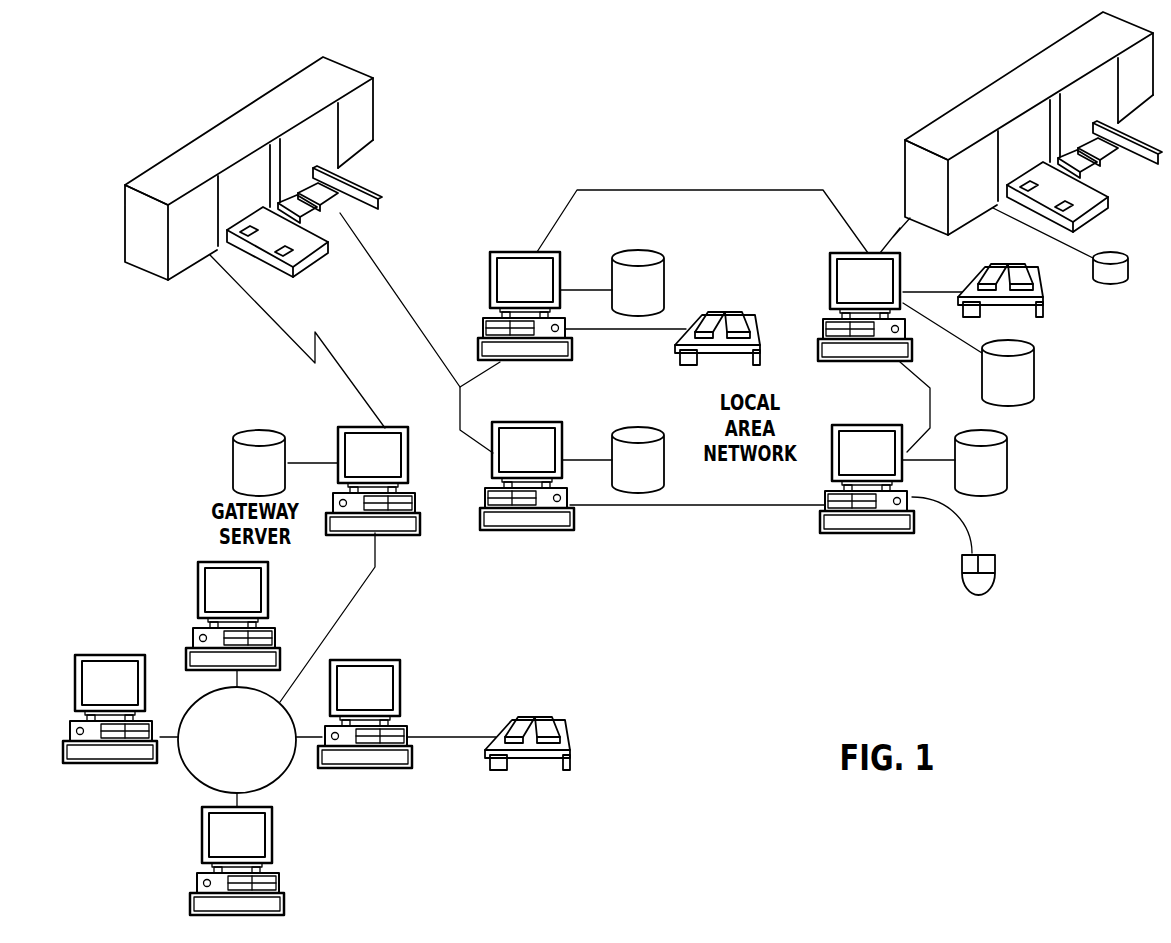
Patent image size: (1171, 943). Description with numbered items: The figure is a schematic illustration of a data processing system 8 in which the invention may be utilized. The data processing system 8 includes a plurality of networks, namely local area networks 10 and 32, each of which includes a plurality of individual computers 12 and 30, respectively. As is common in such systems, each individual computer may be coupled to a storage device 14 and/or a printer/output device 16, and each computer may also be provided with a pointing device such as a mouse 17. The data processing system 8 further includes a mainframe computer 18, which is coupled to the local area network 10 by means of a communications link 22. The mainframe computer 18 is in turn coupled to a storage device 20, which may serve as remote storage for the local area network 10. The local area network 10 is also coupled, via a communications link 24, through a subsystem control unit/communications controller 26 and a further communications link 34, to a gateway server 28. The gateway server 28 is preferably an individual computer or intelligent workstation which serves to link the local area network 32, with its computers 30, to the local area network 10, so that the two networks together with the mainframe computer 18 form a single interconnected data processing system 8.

The data processing system 8 is at (763, 178).
The local area network 10 is at (678, 505).
The individual computer 12 is at (510, 252).
The storage device 14 is at (658, 252).
The printer/output device 16 is at (748, 320).
The mouse 17 is at (997, 577).
The mainframe computer 18 is at (988, 83).
The storage device 20 is at (1102, 285).
The communications link 22 is at (893, 235).
The communications link 24 is at (388, 280).
The subsystem control unit/communications controller 26 is at (187, 143).
The gateway server 28 is at (338, 430).
The individual computer 30 is at (198, 585).
The local area network 32 is at (183, 767).
The communications link 34 is at (247, 297).